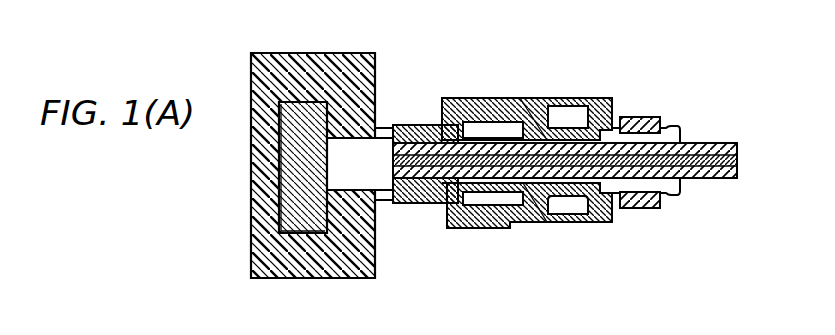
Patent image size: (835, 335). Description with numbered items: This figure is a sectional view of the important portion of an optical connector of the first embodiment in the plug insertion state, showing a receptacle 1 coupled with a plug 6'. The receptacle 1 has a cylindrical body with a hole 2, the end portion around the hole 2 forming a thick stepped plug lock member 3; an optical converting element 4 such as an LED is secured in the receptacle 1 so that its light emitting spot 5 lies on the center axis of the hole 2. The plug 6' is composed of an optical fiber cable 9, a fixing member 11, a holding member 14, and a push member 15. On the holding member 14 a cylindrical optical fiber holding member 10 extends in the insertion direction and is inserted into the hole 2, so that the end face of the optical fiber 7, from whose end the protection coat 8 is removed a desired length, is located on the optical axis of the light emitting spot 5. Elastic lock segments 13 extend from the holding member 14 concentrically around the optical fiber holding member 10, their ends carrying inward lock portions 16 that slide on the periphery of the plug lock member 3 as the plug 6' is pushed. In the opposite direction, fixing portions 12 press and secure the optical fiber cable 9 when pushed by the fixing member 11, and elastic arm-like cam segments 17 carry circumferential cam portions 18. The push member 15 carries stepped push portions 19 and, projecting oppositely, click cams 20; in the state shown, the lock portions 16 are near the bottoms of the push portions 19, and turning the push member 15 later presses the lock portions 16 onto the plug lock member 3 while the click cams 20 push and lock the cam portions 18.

The receptacle 1 is at (251, 98).
The hole 2 is at (355, 160).
The plug lock member 3 is at (394, 128).
The optical converting element 4 is at (292, 177).
The light emitting spot 5 is at (341, 175).
The plug 6' is at (527, 83).
The optical fiber 7 is at (737, 160).
The protection coat 8 is at (725, 144).
The optical fiber cable 9 is at (703, 143).
The optical fiber holding member 10 is at (388, 200).
The fixing member 11 is at (636, 117).
The fixing portions 12 is at (667, 130).
The elastic lock segments 13 is at (488, 228).
The holding member 14 is at (527, 218).
The push member 15 is at (531, 105).
The lock portions 16 is at (443, 215).
The cam segments 17 is at (560, 222).
The cam portions 18 is at (600, 222).
The push portions 19 is at (452, 98).
The click cams 20 is at (585, 98).